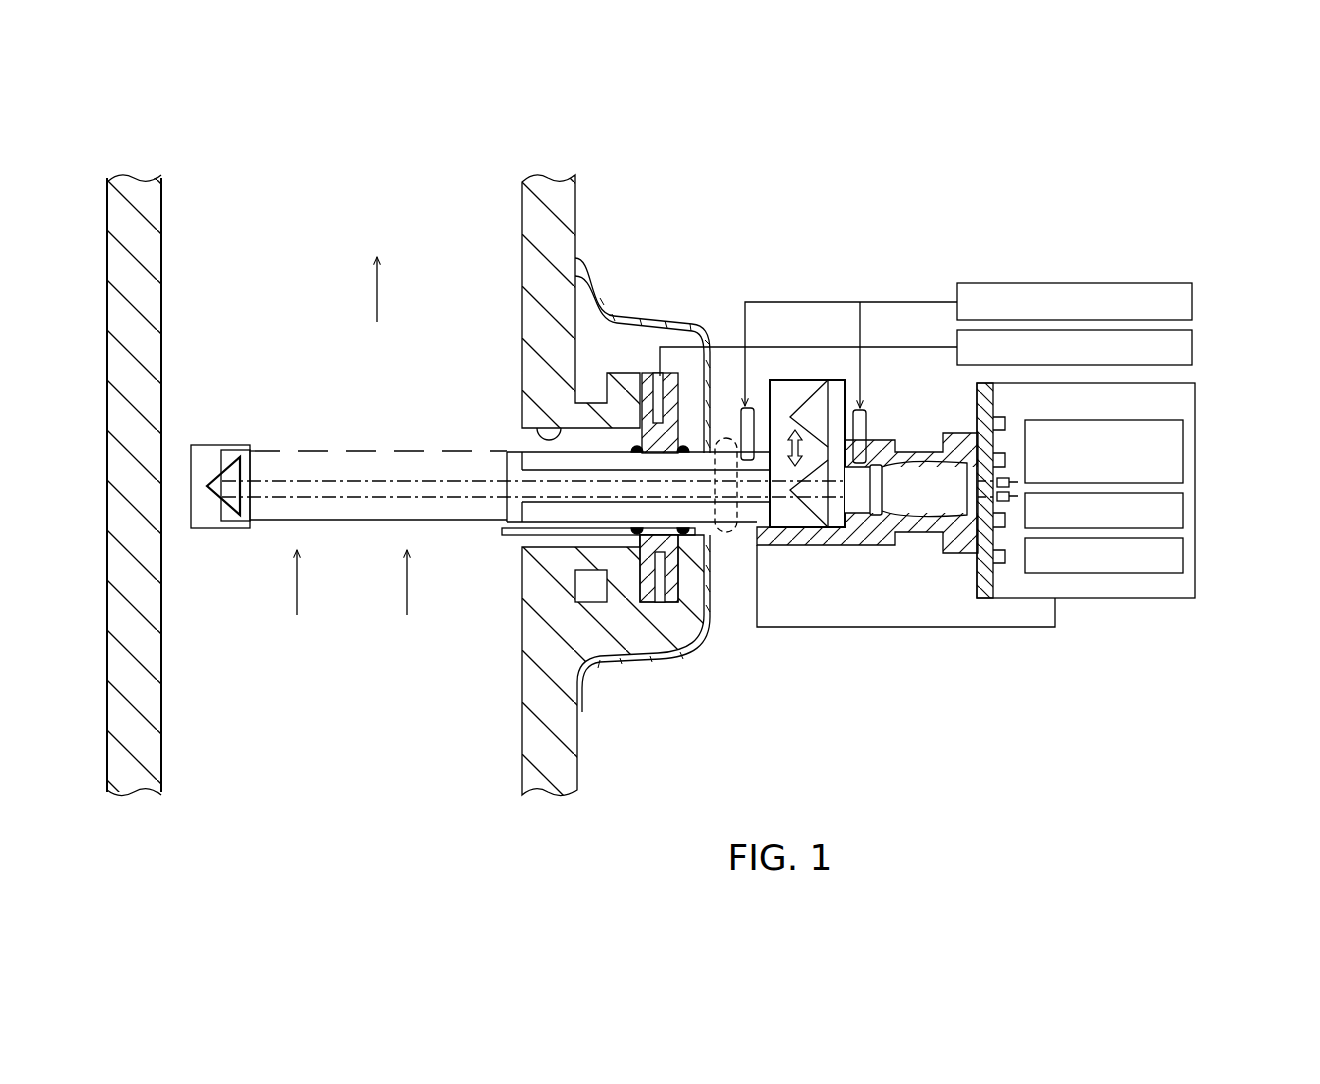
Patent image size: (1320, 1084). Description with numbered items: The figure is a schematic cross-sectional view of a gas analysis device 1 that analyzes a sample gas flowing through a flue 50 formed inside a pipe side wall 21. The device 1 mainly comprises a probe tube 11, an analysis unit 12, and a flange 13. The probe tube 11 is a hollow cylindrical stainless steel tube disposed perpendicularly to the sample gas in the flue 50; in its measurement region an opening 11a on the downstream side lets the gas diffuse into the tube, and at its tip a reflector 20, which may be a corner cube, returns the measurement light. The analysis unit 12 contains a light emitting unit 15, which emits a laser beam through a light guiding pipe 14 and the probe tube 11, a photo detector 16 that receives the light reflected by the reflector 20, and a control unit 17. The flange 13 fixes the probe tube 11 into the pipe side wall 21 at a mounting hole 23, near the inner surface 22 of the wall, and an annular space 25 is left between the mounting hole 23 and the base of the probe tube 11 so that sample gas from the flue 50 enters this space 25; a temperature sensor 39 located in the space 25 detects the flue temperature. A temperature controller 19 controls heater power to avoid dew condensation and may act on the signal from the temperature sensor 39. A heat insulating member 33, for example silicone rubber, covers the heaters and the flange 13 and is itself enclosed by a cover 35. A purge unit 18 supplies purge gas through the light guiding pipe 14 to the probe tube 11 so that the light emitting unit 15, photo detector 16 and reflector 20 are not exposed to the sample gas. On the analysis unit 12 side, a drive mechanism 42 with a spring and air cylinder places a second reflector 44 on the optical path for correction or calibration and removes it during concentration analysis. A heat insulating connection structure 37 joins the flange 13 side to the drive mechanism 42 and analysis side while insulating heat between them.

The gas analysis device 1 is at (708, 228).
The probe tube 11 is at (270, 425).
The opening 11a is at (352, 447).
The analysis unit 12 is at (1023, 499).
The flange 13 is at (650, 371).
The light guiding pipe 14 is at (892, 430).
The light emitting unit 15 is at (1185, 452).
The photo detector 16 is at (1185, 512).
The control unit 17 is at (1185, 556).
The purge unit 18 is at (1197, 302).
The temperature controller 19 is at (1197, 348).
The reflector 20 is at (214, 470).
The pipe side wall 21 is at (168, 218).
The inner surface 22 is at (522, 277).
The mounting hole 23 is at (546, 430).
The space 25 is at (514, 540).
The heat insulating member 33 is at (652, 358).
The cover 35 is at (700, 326).
The heat insulating connection structure 37 is at (723, 538).
The temperature sensor 39 is at (546, 548).
The drive mechanism 42 is at (810, 372).
The second reflector 44 is at (793, 398).
The flue 50 is at (334, 641).